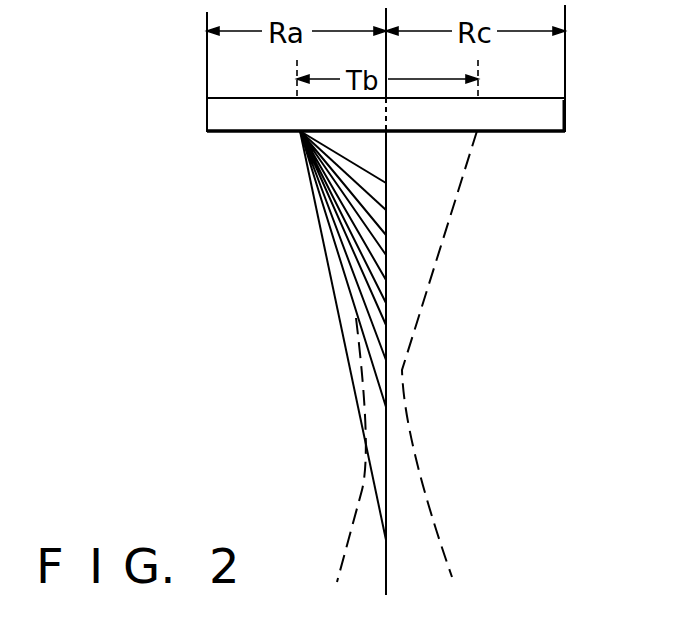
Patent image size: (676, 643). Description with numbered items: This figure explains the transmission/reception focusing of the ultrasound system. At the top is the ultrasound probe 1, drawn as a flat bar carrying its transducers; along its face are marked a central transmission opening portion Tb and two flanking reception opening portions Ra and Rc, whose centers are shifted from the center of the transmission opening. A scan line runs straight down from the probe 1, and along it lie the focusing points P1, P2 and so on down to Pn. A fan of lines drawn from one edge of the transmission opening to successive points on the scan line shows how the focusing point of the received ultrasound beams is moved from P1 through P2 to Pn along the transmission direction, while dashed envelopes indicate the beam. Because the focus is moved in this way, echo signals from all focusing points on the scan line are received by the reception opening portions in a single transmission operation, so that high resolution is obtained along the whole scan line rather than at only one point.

The ultrasound probe 1 is at (568, 106).
The focusing point P1 is at (362, 167).
The focusing point P2 is at (362, 180).
The focusing point Pn is at (362, 345).